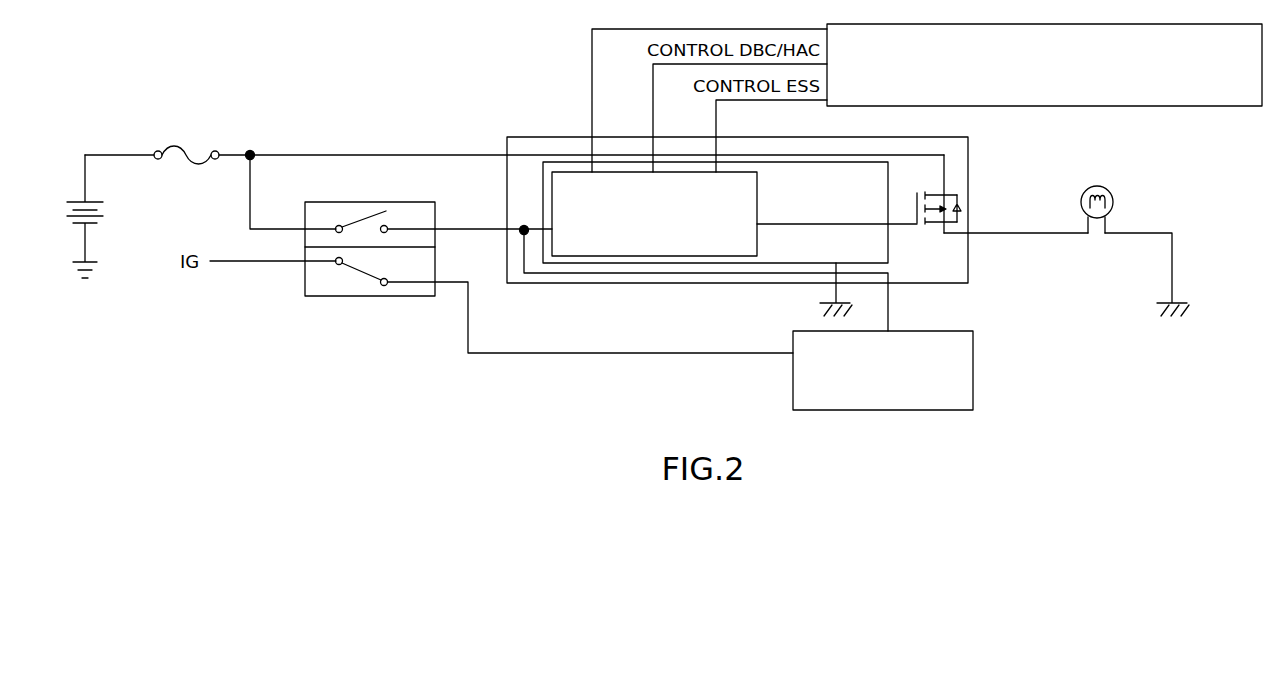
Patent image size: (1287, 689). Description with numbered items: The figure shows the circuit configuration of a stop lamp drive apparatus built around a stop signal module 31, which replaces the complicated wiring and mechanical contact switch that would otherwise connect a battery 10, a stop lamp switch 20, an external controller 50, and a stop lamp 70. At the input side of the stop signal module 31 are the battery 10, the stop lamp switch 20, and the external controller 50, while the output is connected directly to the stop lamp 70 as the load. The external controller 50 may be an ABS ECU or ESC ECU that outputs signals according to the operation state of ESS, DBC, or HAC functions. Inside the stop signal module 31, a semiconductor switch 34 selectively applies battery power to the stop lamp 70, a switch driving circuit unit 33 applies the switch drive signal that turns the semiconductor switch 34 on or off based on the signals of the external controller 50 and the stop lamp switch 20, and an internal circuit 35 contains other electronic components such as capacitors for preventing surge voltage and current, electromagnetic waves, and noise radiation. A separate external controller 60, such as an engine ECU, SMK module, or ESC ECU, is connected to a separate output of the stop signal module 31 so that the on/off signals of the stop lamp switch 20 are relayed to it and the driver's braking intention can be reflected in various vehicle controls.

The battery 10 is at (103, 210).
The stop lamp switch 20 is at (372, 296).
The stop signal module 31 is at (540, 137).
The switch driving circuit unit 33 is at (574, 256).
The semiconductor switch 34 is at (920, 193).
The internal circuit 35 is at (627, 263).
The external controller 50 is at (1247, 108).
The separate external controller 60 is at (793, 386).
The stop lamp 70 is at (1113, 197).